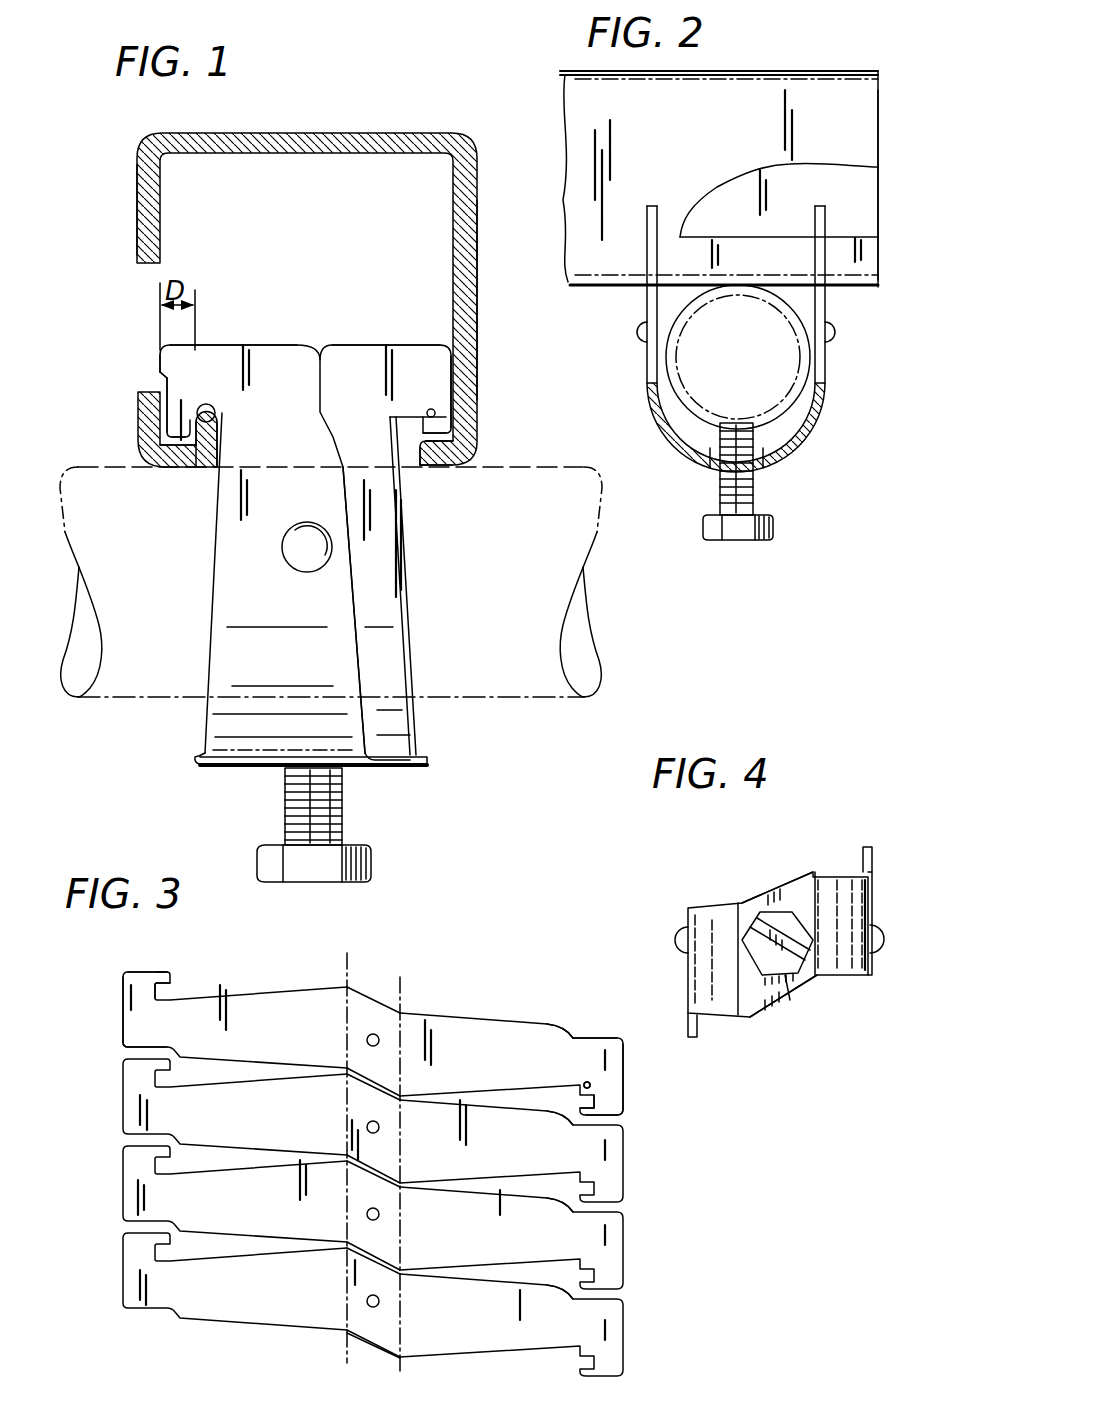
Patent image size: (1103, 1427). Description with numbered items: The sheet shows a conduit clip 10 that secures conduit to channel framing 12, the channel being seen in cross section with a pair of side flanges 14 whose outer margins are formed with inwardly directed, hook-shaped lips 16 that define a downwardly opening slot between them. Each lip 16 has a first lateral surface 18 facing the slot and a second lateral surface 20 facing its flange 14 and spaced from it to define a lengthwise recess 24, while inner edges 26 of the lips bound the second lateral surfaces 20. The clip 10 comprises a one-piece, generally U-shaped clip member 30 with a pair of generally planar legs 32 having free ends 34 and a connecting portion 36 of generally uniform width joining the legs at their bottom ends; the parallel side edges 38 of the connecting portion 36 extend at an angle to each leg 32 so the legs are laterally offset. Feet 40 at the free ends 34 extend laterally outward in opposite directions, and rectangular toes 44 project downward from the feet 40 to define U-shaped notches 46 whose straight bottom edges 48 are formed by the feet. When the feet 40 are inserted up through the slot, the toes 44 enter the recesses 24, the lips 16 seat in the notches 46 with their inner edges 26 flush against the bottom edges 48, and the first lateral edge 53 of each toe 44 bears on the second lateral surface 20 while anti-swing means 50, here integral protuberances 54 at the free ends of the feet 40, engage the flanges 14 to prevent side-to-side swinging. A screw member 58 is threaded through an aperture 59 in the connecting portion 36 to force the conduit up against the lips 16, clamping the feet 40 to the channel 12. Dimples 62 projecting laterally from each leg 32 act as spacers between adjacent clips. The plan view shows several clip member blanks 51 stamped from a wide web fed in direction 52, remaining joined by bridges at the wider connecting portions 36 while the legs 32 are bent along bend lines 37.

In FIG. 1, the clip 10 is at (183, 708).
In FIG. 4, the clip 10 is at (718, 878).
In FIG. 1, the channel framing 12 is at (352, 133).
In FIG. 2, the channel framing 12 is at (563, 71).
In FIG. 1, the side flanges 14 is at (137, 200).
In FIG. 2, the side flanges 14 is at (848, 126).
In FIG. 1, the lips 16 is at (178, 467).
In FIG. 2, the lips 16 is at (872, 290).
In FIG. 1, the first lateral surface 18 is at (223, 433).
In FIG. 2, the first lateral surface 18 is at (875, 258).
In FIG. 1, the second lateral surface 20 is at (198, 467).
In FIG. 1, the recess 24 is at (433, 443).
In FIG. 1, the inner edges 26 is at (214, 419).
In FIG. 1, the clip member 30 is at (411, 580).
In FIG. 3, the clip member 30 is at (478, 1016).
In FIG. 4, the clip member 30 is at (720, 1008).
In FIG. 1, the legs 32 is at (395, 605).
In FIG. 2, the legs 32 is at (647, 265).
In FIG. 3, the legs 32 is at (305, 1046).
In FIG. 4, the legs 32 is at (872, 915).
In FIG. 1, the free ends 34 is at (328, 345).
In FIG. 2, the free ends 34 is at (652, 206).
In FIG. 1, the connecting portion 36 is at (377, 770).
In FIG. 2, the connecting portion 36 is at (756, 470).
In FIG. 3, the connecting portion 36 is at (375, 1033).
In FIG. 4, the connecting portion 36 is at (813, 980).
In FIG. 3, the bend lines 37 is at (345, 960).
In FIG. 1, the side edges 38 is at (195, 762).
In FIG. 4, the side edges 38 is at (777, 887).
In FIG. 1, the feet 40 is at (212, 380).
In FIG. 3, the feet 40 is at (126, 995).
In FIG. 1, the toes 44 is at (178, 428).
In FIG. 3, the toes 44 is at (163, 975).
In FIG. 4, the toes 44 is at (868, 848).
In FIG. 3, the notches 46 is at (172, 992).
In FIG. 3, the bottom edges 48 is at (130, 1025).
In FIG. 1, the anti-swing means 50 is at (157, 362).
In FIG. 3, the clip member blanks 51 is at (545, 1024).
In FIG. 3, the direction of feed 52 is at (362, 1322).
In FIG. 3, the first lateral edge 53 is at (160, 990).
In FIG. 1, the protuberances 54 is at (163, 375).
In FIG. 3, the protuberances 54 is at (128, 972).
In FIG. 1, the screw member 58 is at (372, 862).
In FIG. 2, the screw member 58 is at (758, 540).
In FIG. 4, the screw member 58 is at (782, 963).
In FIG. 2, the aperture 59 is at (762, 443).
In FIG. 1, the dimples 62 is at (297, 545).
In FIG. 2, the dimples 62 is at (643, 338).
In FIG. 4, the dimples 62 is at (680, 930).